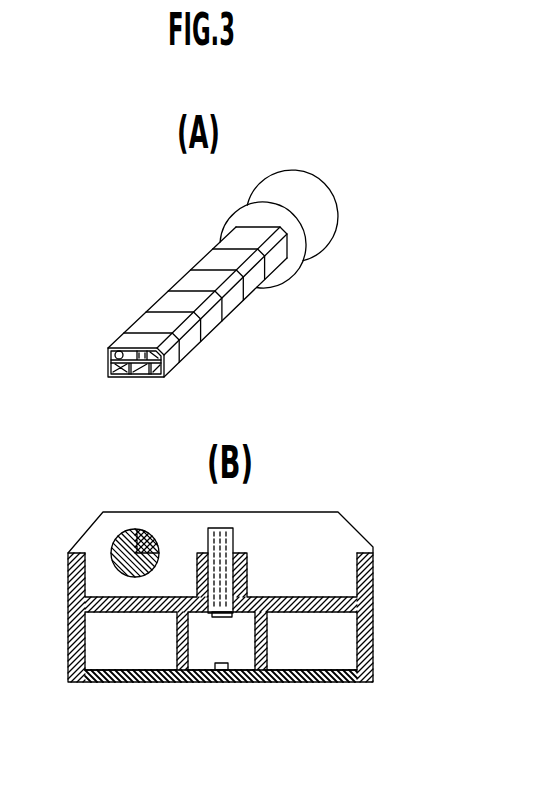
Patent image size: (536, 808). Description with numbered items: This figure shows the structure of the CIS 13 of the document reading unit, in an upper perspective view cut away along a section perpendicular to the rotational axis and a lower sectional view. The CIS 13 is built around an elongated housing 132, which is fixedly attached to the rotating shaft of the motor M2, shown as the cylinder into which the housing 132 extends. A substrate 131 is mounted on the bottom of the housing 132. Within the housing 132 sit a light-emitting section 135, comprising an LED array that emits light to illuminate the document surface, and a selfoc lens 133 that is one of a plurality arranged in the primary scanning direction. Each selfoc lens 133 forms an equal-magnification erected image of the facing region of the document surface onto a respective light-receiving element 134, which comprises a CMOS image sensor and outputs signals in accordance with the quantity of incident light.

The CIS 13 is at (112, 254).
The housing 132 is at (187, 345).
The motor M2 is at (305, 258).
The substrate 131 is at (277, 682).
The selfoc lens 133 is at (221, 527).
The light-receiving element 134 is at (226, 661).
The light-emitting section 135 is at (133, 532).